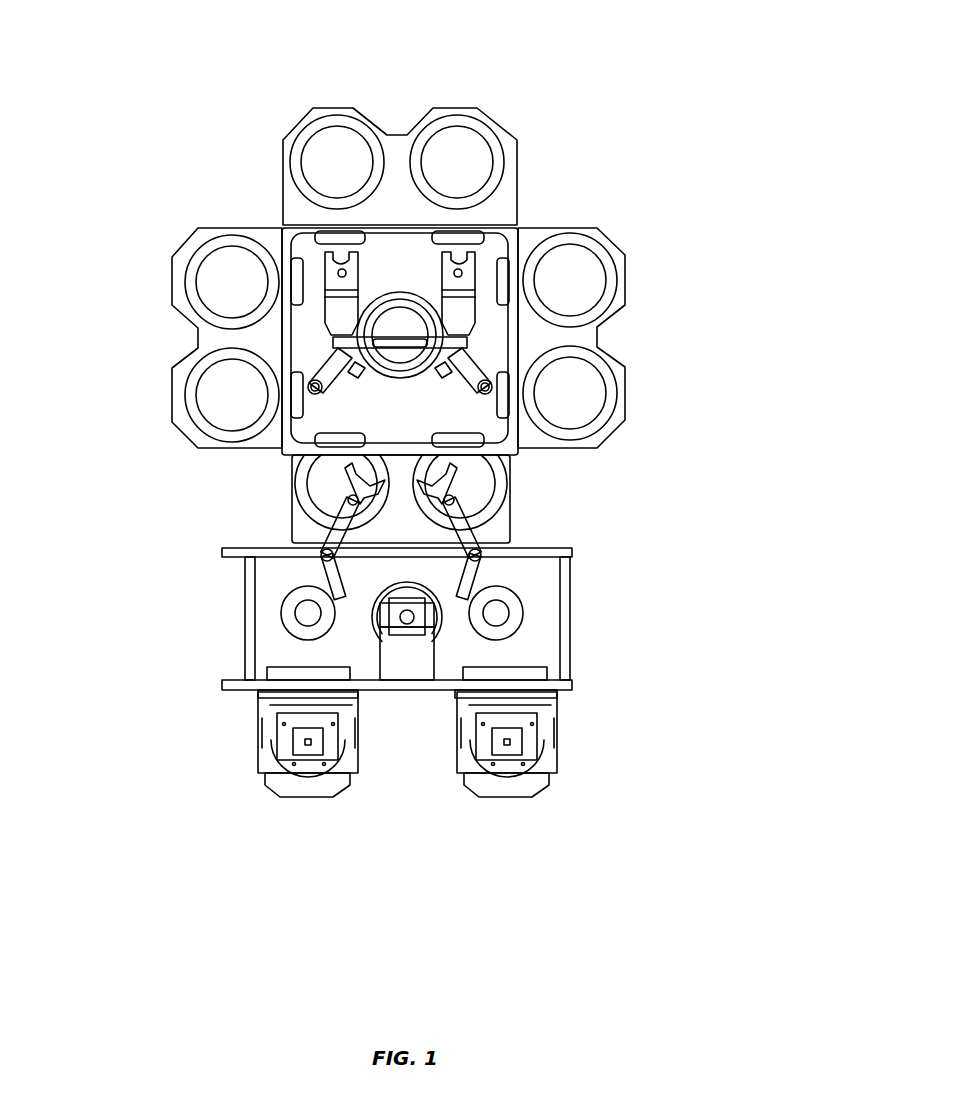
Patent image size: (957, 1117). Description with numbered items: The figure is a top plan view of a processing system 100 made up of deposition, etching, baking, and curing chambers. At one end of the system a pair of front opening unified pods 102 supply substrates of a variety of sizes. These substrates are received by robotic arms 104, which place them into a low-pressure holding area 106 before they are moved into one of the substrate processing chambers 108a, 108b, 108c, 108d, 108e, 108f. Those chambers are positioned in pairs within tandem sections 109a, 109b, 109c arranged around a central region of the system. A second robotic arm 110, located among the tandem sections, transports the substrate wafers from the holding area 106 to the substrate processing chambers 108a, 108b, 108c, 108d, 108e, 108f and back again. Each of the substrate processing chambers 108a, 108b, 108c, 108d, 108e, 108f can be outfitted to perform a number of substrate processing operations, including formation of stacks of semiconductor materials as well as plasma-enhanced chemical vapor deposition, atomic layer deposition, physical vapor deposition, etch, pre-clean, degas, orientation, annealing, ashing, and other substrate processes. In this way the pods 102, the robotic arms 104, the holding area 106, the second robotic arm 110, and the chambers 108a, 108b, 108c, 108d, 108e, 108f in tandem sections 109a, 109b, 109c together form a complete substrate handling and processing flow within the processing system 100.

The processing system 100 is at (166, 61).
The front opening unified pods 102 is at (507, 768).
The robotic arms 104 is at (337, 527).
The low-pressure holding area 106 is at (495, 483).
The substrate processing chamber 108a is at (345, 152).
The substrate processing chamber 108b is at (470, 155).
The substrate processing chamber 108c is at (582, 285).
The substrate processing chamber 108d is at (580, 395).
The substrate processing chamber 108e is at (230, 285).
The substrate processing chamber 108f is at (235, 403).
The tandem section 109a is at (625, 306).
The tandem section 109b is at (437, 110).
The tandem section 109c is at (190, 350).
The second robotic arm 110 is at (457, 310).